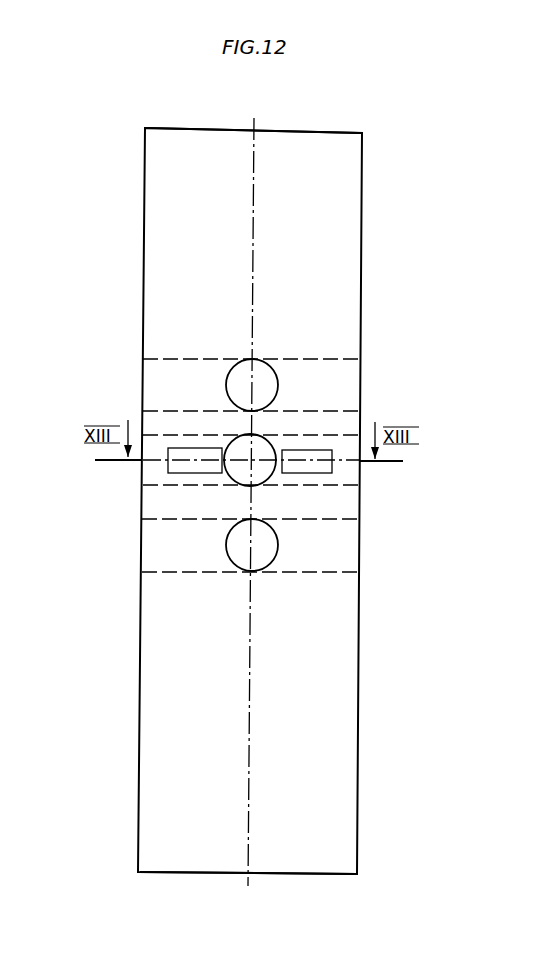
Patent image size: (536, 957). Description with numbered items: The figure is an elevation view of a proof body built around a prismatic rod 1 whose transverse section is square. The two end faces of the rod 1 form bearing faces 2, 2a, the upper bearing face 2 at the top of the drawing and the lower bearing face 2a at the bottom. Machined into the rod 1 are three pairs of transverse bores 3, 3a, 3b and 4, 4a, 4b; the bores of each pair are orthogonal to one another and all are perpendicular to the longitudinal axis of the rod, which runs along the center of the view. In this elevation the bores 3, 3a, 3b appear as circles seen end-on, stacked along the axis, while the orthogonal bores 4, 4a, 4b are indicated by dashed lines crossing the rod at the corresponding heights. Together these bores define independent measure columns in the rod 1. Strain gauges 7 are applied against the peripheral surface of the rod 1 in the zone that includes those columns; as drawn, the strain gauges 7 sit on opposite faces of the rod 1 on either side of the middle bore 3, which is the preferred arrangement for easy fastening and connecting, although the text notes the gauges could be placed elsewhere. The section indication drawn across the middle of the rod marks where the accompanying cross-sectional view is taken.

The prismatic rod 1 is at (363, 205).
The bearing face 2 is at (311, 129).
The bearing face 2a is at (173, 874).
The transverse bore 3 is at (235, 462).
The transverse bore 3a is at (236, 377).
The transverse bore 3b is at (238, 559).
The transverse bore 4 is at (363, 473).
The transverse bore 4a is at (363, 371).
The transverse bore 4b is at (363, 561).
The strain gauge 7 is at (185, 468).